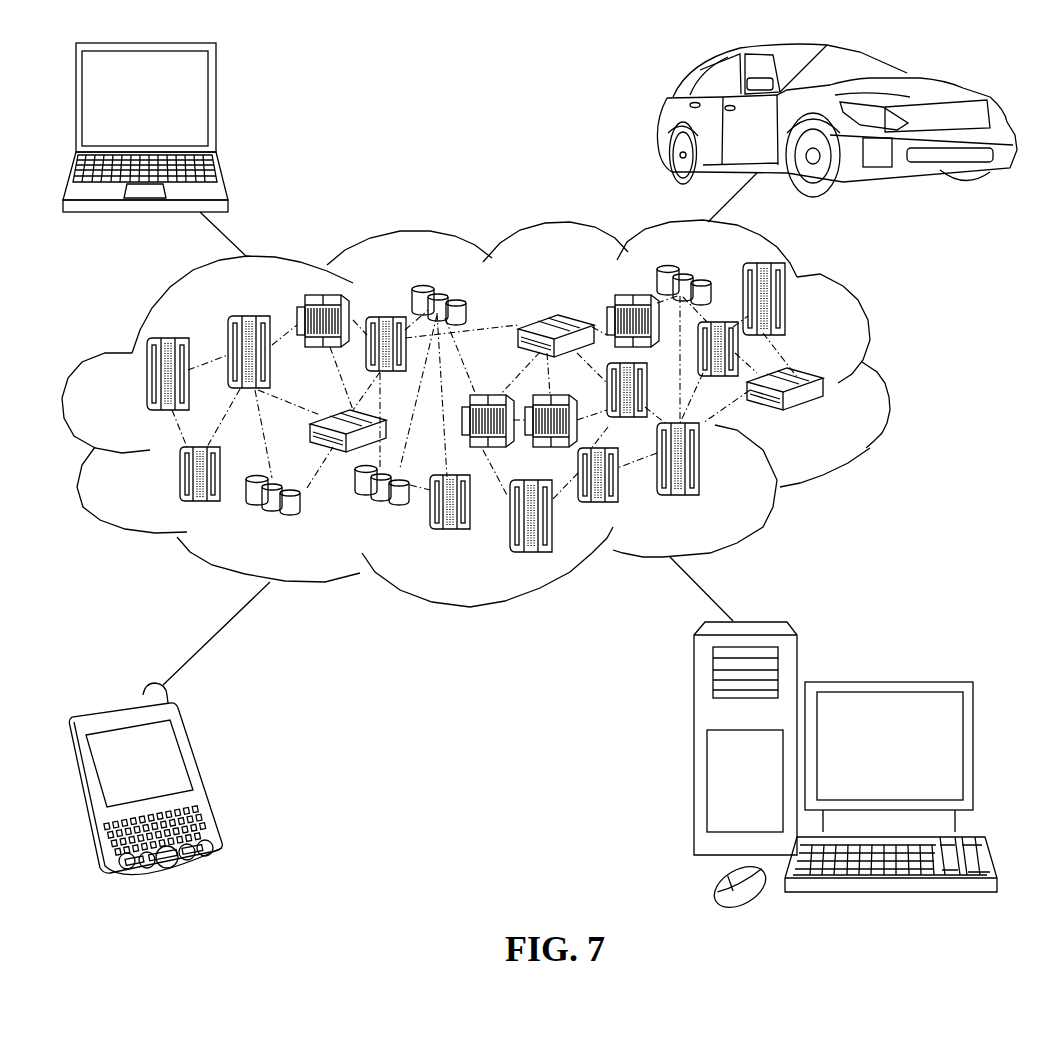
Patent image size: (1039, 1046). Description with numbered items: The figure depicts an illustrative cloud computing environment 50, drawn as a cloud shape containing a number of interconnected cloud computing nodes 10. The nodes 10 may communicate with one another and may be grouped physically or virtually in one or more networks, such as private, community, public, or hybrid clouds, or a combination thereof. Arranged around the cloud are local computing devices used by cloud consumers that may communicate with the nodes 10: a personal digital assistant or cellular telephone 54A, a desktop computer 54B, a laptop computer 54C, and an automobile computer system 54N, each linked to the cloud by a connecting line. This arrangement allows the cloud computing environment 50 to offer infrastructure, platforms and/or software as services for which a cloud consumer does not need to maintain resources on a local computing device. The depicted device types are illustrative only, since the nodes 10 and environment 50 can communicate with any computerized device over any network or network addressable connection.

The laptop computer 54C is at (217, 108).
The automobile computer system 54N is at (661, 122).
The personal digital assistant (PDA) or cellular telephone 54A is at (205, 777).
The desktop computer 54B is at (885, 680).
The cloud computing environment 50 is at (885, 383).
The cloud computing nodes 10 is at (828, 418).